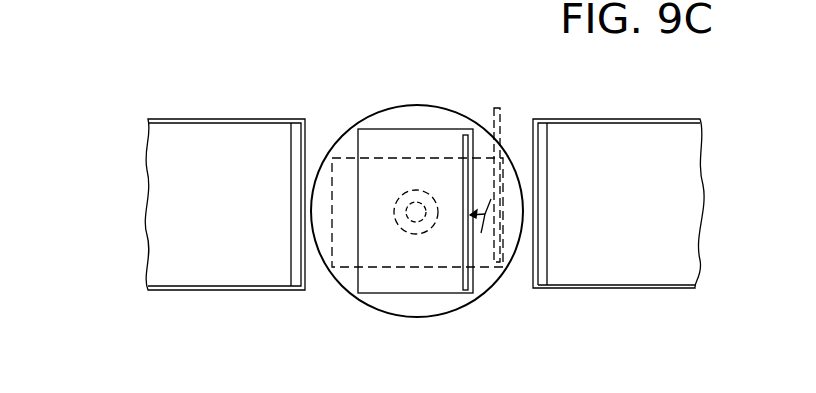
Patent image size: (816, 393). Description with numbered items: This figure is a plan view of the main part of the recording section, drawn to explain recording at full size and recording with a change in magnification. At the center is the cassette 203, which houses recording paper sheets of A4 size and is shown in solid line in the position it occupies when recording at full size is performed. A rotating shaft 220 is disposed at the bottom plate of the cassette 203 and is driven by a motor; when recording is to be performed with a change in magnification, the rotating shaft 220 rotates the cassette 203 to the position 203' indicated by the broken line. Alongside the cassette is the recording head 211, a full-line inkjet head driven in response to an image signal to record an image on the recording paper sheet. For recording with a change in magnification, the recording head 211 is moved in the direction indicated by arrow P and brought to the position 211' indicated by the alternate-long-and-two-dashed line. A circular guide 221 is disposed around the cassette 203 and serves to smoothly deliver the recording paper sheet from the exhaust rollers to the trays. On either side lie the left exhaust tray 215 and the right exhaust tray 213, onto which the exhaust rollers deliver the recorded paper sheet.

The cassette 203 is at (415, 173).
The position of the cassette 203' is at (407, 176).
The recording head 211 is at (468, 180).
The position of the recording head 211' is at (539, 171).
The right exhaust tray 213 is at (658, 130).
The left exhaust tray 215 is at (248, 133).
The rotating shaft 220 is at (410, 222).
The circular guide 221 is at (427, 305).
The arrow indicating direction of recording head movement P is at (480, 226).